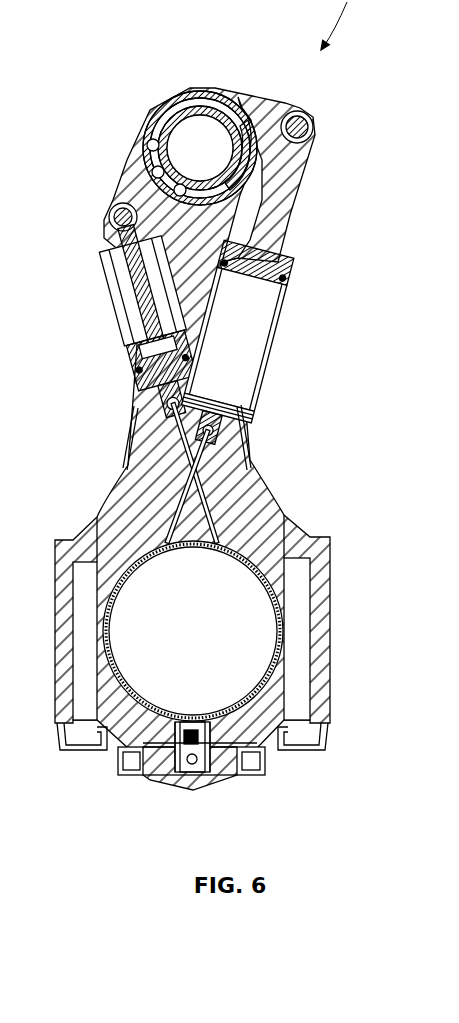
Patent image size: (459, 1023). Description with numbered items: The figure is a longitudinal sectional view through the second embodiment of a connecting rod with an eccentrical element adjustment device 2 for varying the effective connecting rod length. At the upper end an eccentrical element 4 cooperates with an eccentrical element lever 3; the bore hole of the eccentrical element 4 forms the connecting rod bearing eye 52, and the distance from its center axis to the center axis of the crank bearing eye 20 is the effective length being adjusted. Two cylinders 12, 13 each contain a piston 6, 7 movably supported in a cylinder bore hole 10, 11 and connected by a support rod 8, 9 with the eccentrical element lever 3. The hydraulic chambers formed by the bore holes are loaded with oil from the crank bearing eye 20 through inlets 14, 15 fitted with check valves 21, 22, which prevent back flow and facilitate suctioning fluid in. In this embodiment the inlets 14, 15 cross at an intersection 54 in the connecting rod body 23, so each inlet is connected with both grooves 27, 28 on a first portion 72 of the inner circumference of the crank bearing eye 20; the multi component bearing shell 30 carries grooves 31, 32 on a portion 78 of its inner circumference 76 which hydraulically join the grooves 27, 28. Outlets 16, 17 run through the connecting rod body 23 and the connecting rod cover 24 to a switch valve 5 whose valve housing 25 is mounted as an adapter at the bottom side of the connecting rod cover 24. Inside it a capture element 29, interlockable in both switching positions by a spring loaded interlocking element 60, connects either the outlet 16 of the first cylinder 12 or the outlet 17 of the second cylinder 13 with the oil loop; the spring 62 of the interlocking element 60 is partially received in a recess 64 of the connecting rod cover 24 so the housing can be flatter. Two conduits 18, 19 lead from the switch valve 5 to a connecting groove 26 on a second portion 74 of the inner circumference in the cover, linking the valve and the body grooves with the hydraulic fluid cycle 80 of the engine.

The eccentrical element adjustment device 2 is at (118, 89).
The eccentrical element lever 3 is at (268, 115).
The eccentrical element 4 is at (160, 112).
The connecting rod bearing eye 52 is at (200, 140).
The support rod 9 is at (285, 212).
The support rod 8 is at (115, 330).
The first cylinder 12 is at (112, 300).
The cylinder bore hole 10 is at (135, 318).
The piston 6 is at (132, 368).
The check valve 21 is at (167, 397).
The outlet 16 is at (133, 422).
The inlet 14 is at (180, 462).
The intersection 54 is at (165, 492).
The groove 27 is at (118, 552).
The groove 31 is at (95, 636).
The bearing shell 30 is at (197, 548).
The inner circumference of the bearing shell 76 is at (166, 565).
The first portion of the inner circumference 72 is at (228, 568).
The crank bearing eye 20 is at (240, 637).
The second portion of the inner circumference 74 is at (128, 692).
The conduit 18 is at (160, 712).
The conduit 19 is at (236, 708).
The spring 62 is at (180, 718).
The recess 64 is at (208, 728).
The groove 28 is at (258, 558).
The connecting rod body 23 is at (272, 512).
The groove 32 is at (325, 636).
The portion of the inner circumference of the bearing shell 78 is at (282, 677).
The hydraulic fluid cycle 80 is at (100, 716).
The connecting groove 26 is at (118, 737).
The valve housing 25 is at (150, 777).
The switch valve 5 is at (172, 790).
The capture element 29 is at (194, 792).
The interlocking element 60 is at (212, 772).
The connecting rod cover 24 is at (258, 748).
The check valve 22 is at (216, 430).
The outlet 17 is at (252, 472).
The inlet 15 is at (244, 482).
The piston 7 is at (287, 292).
The cylinder bore hole 11 is at (272, 337).
The second cylinder 13 is at (292, 368).